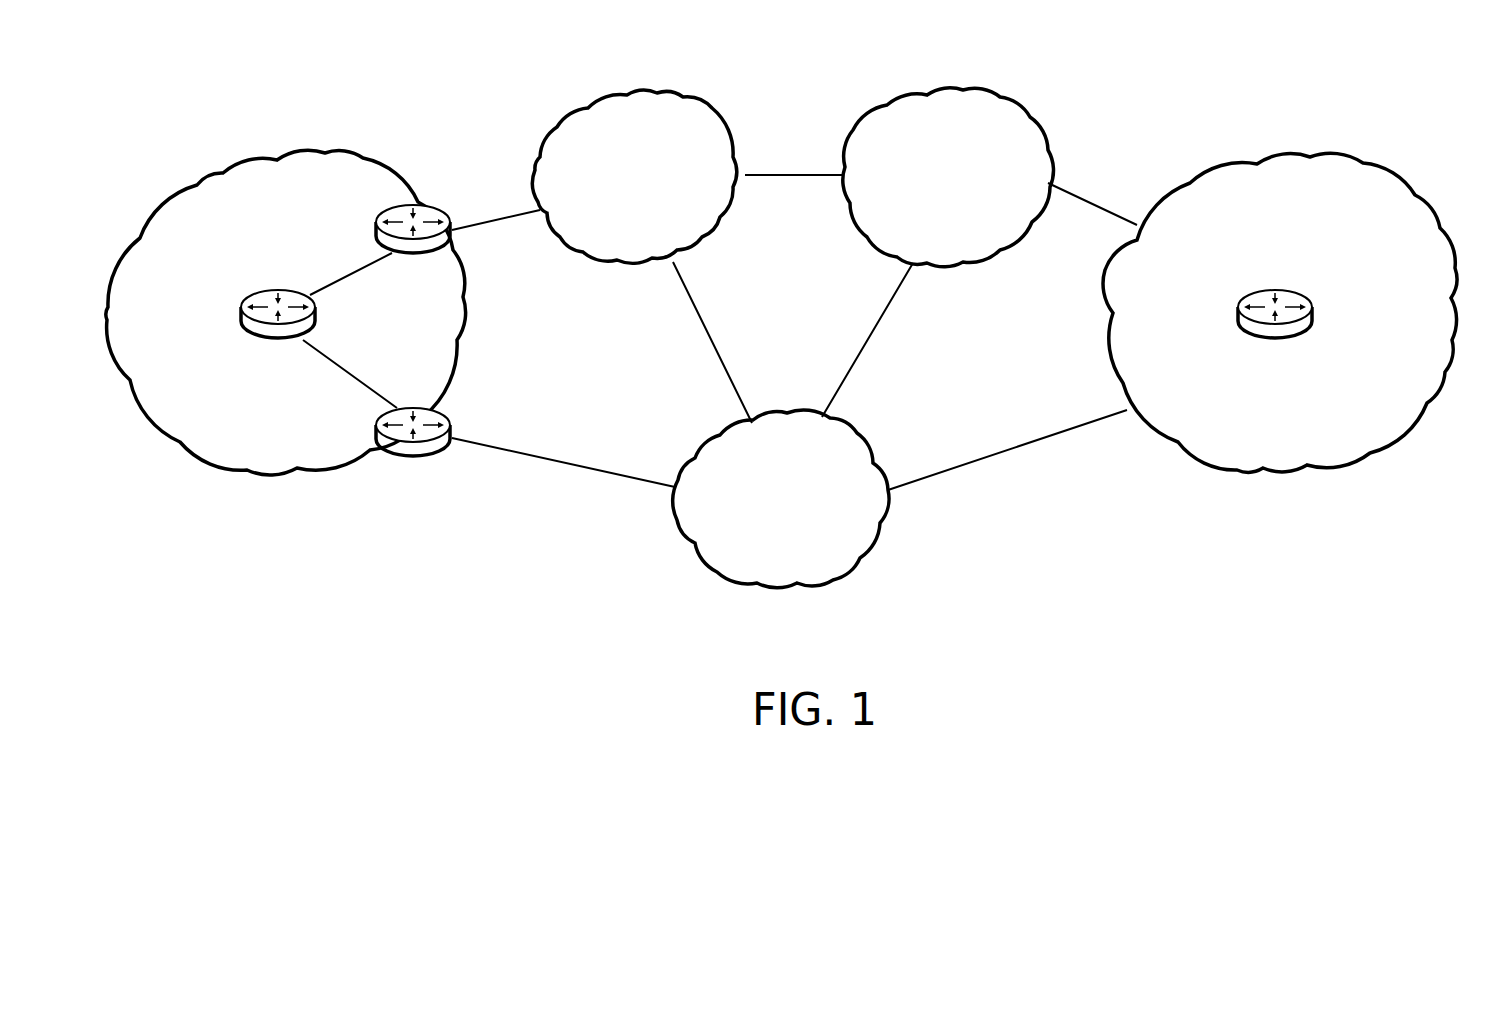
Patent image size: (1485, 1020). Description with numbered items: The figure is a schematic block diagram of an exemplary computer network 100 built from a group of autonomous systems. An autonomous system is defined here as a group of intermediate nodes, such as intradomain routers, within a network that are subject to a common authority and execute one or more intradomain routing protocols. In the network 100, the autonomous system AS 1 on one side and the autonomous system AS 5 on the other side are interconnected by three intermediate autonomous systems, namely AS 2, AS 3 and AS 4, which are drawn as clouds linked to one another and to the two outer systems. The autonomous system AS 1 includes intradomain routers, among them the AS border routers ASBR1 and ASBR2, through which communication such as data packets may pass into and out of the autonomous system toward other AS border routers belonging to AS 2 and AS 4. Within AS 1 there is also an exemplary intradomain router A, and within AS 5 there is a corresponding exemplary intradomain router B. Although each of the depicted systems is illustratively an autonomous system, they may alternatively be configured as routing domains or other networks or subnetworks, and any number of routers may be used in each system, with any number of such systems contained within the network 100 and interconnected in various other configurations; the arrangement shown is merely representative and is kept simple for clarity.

The computer network 100 is at (475, 93).
The autonomous system AS1 1 is at (286, 312).
The autonomous system AS2 2 is at (635, 176).
The autonomous system AS3 3 is at (948, 177).
The autonomous system AS4 4 is at (781, 499).
The autonomous system AS5 5 is at (1280, 312).
The intradomain router A is at (268, 301).
The intradomain router B is at (1288, 301).
The AS border router ASBR1 is at (445, 210).
The AS border router ASBR2 is at (430, 456).